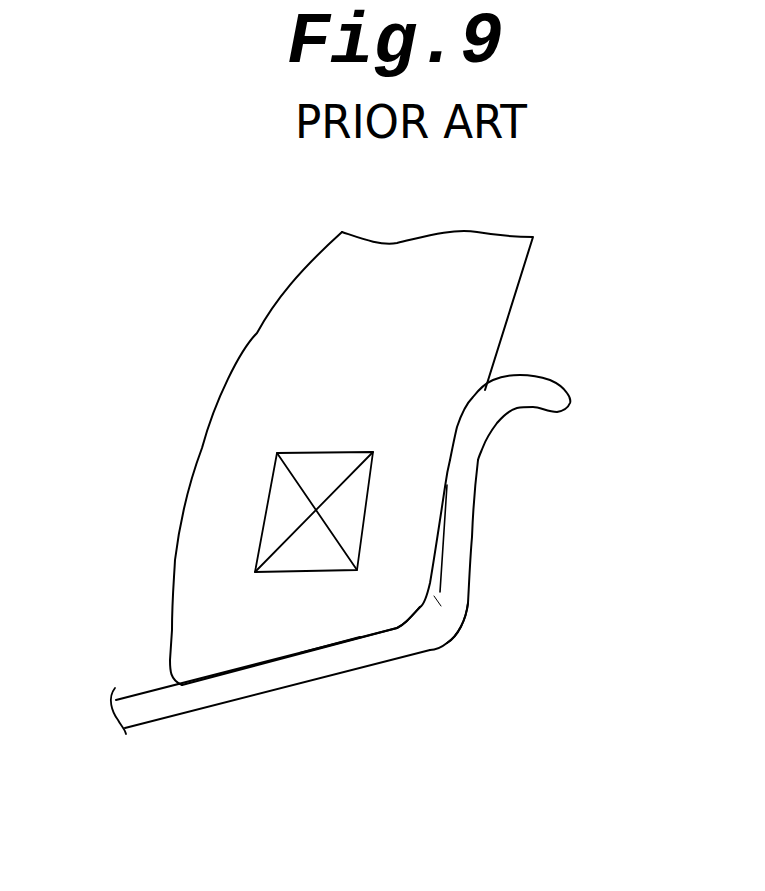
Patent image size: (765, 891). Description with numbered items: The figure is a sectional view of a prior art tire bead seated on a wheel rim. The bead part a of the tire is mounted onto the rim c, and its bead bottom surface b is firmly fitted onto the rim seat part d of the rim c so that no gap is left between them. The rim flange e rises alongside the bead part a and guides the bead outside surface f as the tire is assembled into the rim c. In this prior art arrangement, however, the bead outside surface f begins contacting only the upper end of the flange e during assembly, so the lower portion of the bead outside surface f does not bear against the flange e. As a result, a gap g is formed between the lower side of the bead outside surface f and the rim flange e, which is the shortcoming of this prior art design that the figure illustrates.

The bead part a is at (197, 618).
The bead bottom surface b is at (255, 675).
The rim c is at (418, 642).
The rim seat part d is at (347, 647).
The rim flange e is at (463, 535).
The bead outside surface f is at (443, 518).
The gap g is at (435, 598).